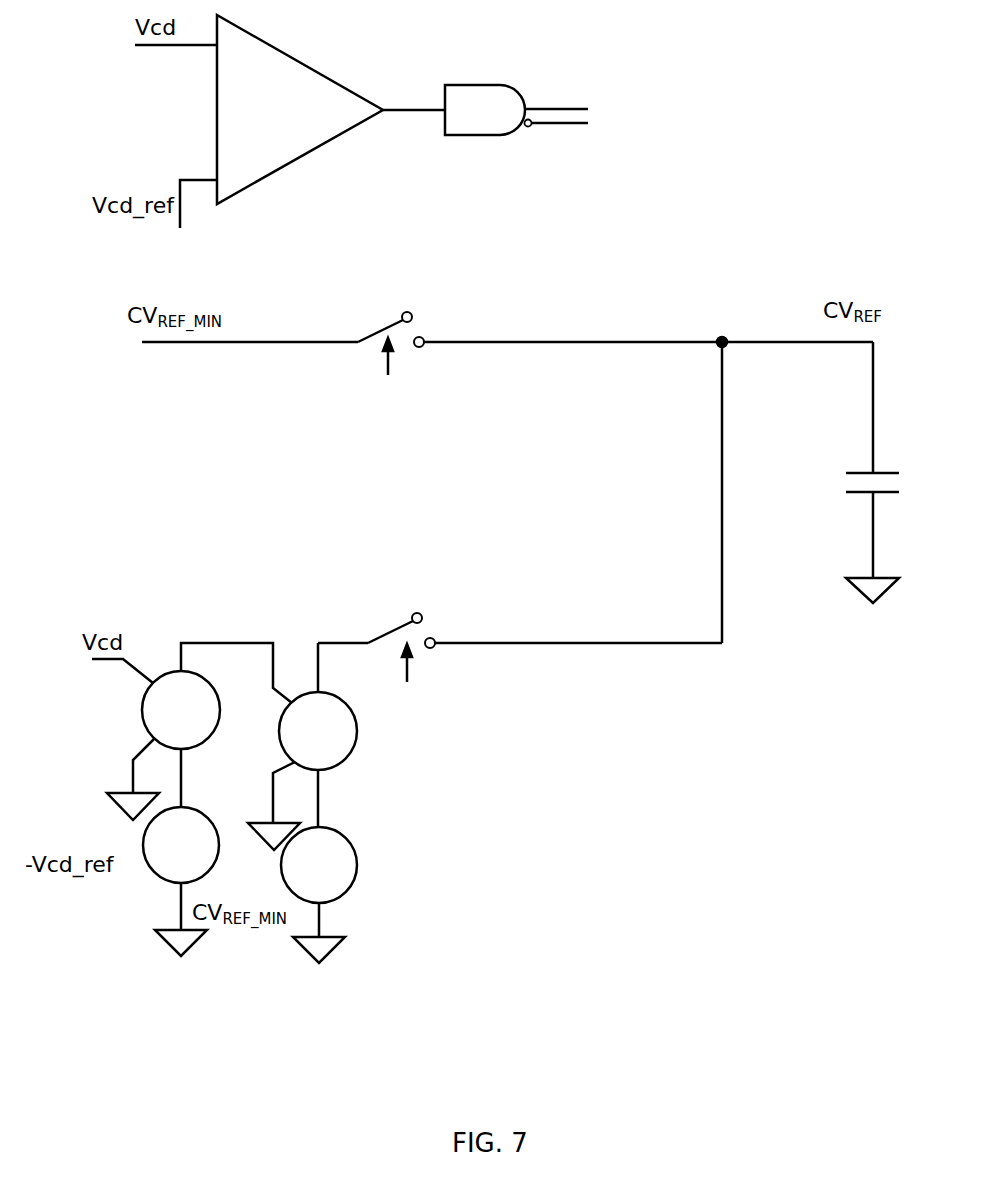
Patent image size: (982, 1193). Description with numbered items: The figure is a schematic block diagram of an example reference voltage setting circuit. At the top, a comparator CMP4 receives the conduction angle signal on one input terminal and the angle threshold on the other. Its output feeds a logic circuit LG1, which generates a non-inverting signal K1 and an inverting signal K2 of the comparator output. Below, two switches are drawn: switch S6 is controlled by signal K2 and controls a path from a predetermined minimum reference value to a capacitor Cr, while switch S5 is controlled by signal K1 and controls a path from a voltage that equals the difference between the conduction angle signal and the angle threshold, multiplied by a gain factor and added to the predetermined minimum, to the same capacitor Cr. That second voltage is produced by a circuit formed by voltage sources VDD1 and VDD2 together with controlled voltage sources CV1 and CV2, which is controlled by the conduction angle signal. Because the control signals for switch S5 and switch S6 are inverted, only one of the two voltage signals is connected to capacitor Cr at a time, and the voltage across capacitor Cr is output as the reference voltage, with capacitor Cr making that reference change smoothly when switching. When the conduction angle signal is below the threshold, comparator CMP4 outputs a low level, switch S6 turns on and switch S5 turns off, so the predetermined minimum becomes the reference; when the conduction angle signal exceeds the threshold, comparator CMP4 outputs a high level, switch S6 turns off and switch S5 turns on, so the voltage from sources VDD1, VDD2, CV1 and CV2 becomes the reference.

The comparator CMP4 is at (259, 121).
The logic circuit LG1 is at (454, 123).
The non-inverting signal K1 is at (490, 395).
The inverting signal K2 is at (481, 263).
The switch S6 is at (432, 326).
The switch S5 is at (520, 630).
The capacitor Cr is at (847, 472).
The controlled voltage source CV1 is at (192, 731).
The controlled voltage source CV2 is at (329, 746).
The voltage source VDD1 is at (162, 852).
The voltage source VDD2 is at (354, 866).